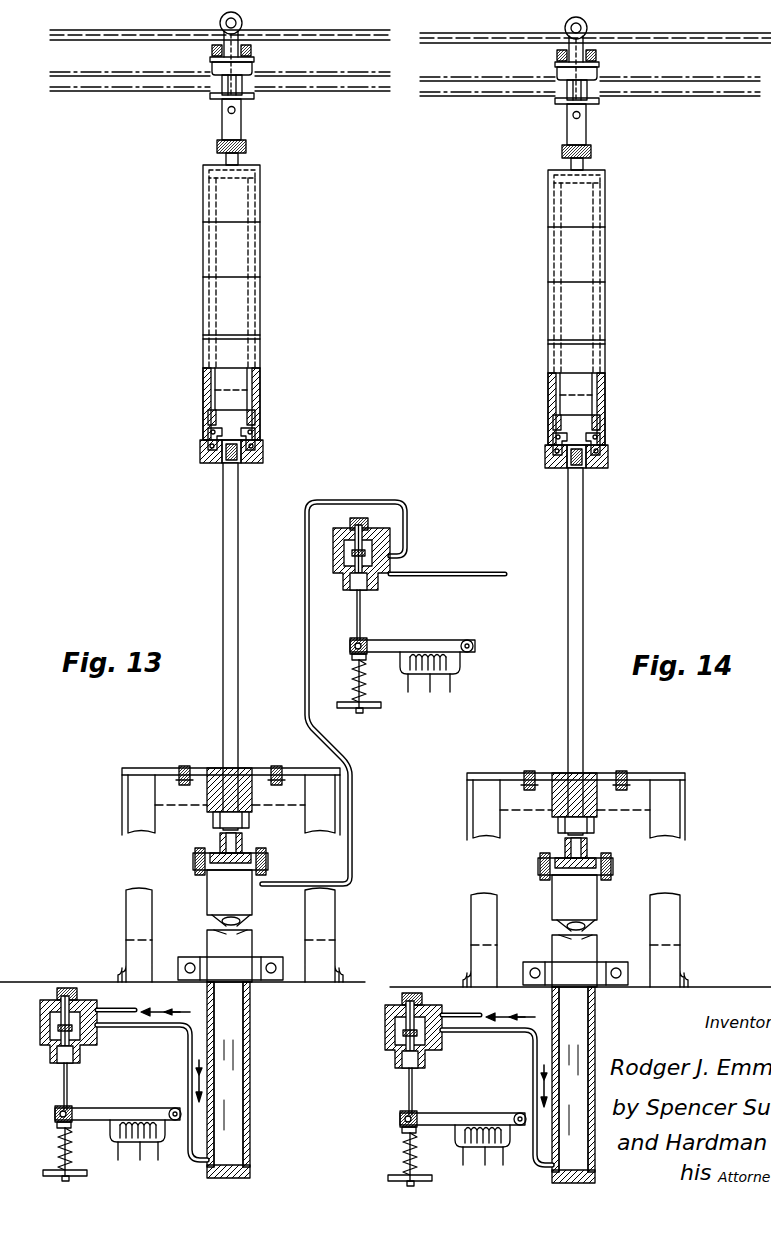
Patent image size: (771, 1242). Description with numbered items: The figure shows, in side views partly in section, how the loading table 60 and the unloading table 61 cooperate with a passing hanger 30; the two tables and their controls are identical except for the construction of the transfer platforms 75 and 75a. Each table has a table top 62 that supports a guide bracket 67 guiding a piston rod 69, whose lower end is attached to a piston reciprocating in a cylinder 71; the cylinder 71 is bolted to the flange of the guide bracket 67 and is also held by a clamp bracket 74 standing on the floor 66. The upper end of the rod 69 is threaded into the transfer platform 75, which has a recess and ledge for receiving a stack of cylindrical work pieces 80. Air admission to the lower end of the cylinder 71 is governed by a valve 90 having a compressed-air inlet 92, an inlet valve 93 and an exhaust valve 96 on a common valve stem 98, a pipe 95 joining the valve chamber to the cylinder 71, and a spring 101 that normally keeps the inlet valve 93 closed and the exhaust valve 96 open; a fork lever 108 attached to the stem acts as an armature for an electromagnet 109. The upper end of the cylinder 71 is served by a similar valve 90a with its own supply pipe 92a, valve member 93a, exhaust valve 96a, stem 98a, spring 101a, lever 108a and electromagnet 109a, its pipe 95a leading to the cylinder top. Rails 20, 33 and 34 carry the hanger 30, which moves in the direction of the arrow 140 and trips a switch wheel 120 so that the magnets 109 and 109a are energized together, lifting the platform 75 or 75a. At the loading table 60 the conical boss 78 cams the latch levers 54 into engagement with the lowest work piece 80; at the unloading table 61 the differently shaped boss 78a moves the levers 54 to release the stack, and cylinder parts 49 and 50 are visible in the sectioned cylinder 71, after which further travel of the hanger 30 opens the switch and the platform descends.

In FIG. 13, the track rails 20 is at (83, 89).
In FIG. 14, the track rails 20 is at (473, 94).
In FIG. 13, the hanger 30 is at (182, 149).
In FIG. 14, the hanger 30 is at (519, 146).
In FIG. 13, the switch wheel 33 is at (244, 23).
In FIG. 14, the switch wheel 33 is at (596, 58).
In FIG. 13, the upper rail 34 is at (97, 31).
In FIG. 14, the upper rail 34 is at (485, 36).
In FIG. 13, the cylinder head 49 is at (250, 174).
In FIG. 14, the cylinder head 49 is at (592, 166).
In FIG. 13, the piston gland 50 is at (256, 380).
In FIG. 14, the piston gland 50 is at (597, 407).
In FIG. 13, the latch levers 54 is at (255, 436).
In FIG. 14, the latch levers 54 is at (575, 438).
In FIG. 13, the loading table 60 is at (98, 797).
In FIG. 14, the unloading table 61 is at (429, 787).
In FIG. 13, the table top 62 is at (165, 768).
In FIG. 14, the table top 62 is at (576, 792).
In FIG. 13, the floor 66 is at (70, 982).
In FIG. 14, the floor 66 is at (378, 982).
In FIG. 13, the guide bracket 67 is at (213, 818).
In FIG. 14, the guide bracket 67 is at (554, 822).
In FIG. 13, the piston rod 69 is at (232, 597).
In FIG. 14, the piston rod 69 is at (589, 651).
In FIG. 13, the cylinder 71 is at (207, 903).
In FIG. 14, the cylinder 71 is at (559, 931).
In FIG. 13, the clamp bracket 74 is at (187, 957).
In FIG. 14, the clamp bracket 74 is at (573, 960).
In FIG. 13, the transfer platform 75 is at (205, 462).
In FIG. 14, the transfer platform 75a is at (552, 461).
In FIG. 13, the conical boss 78 is at (225, 462).
In FIG. 14, the central boss 78a is at (552, 477).
In FIG. 13, the work pieces 80 is at (260, 313).
In FIG. 14, the work pieces 80 is at (594, 307).
In FIG. 13, the valve 90 is at (40, 1012).
In FIG. 14, the valve 90 is at (397, 1030).
In FIG. 13, the valve 90a is at (340, 548).
In FIG. 13, the compressed-air inlet 92 is at (118, 1005).
In FIG. 14, the compressed-air inlet 92 is at (488, 1002).
In FIG. 13, the air supply pipe 92a is at (462, 570).
In FIG. 13, the inlet valve 93 is at (52, 1025).
In FIG. 14, the inlet valve 93 is at (384, 1028).
In FIG. 13, the valve member 93a is at (348, 560).
In FIG. 13, the pipe 95 is at (155, 1030).
In FIG. 14, the pipe 95 is at (497, 1097).
In FIG. 13, the pipe 95a is at (407, 523).
In FIG. 13, the exhaust valve 96 is at (57, 1055).
In FIG. 14, the exhaust valve 96 is at (387, 1065).
In FIG. 13, the exhaust valve 96a is at (352, 588).
In FIG. 13, the valve stem 98 is at (64, 1087).
In FIG. 14, the valve stem 98 is at (394, 1091).
In FIG. 13, the valve stem 98a is at (357, 622).
In FIG. 13, the spring 101 is at (58, 1141).
In FIG. 14, the spring 101 is at (399, 1159).
In FIG. 13, the spring 101a is at (352, 675).
In FIG. 13, the fork lever 108 is at (100, 1108).
In FIG. 14, the fork lever 108 is at (463, 1111).
In FIG. 13, the fork lever 108a is at (400, 640).
In FIG. 13, the electromagnet 109 is at (140, 1145).
In FIG. 14, the electromagnet 109 is at (482, 1154).
In FIG. 13, the electromagnet 109a is at (433, 676).
In FIG. 13, the switch wheel 120 is at (212, 49).
In FIG. 14, the switch wheel 120 is at (610, 108).
In FIG. 13, the arrow 140 is at (162, 184).